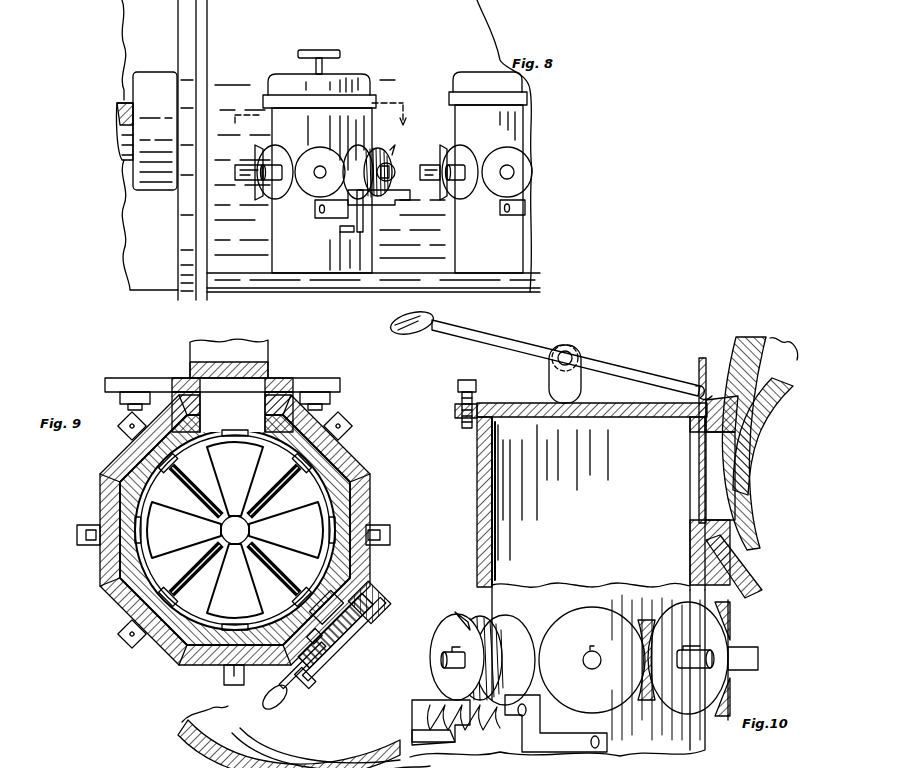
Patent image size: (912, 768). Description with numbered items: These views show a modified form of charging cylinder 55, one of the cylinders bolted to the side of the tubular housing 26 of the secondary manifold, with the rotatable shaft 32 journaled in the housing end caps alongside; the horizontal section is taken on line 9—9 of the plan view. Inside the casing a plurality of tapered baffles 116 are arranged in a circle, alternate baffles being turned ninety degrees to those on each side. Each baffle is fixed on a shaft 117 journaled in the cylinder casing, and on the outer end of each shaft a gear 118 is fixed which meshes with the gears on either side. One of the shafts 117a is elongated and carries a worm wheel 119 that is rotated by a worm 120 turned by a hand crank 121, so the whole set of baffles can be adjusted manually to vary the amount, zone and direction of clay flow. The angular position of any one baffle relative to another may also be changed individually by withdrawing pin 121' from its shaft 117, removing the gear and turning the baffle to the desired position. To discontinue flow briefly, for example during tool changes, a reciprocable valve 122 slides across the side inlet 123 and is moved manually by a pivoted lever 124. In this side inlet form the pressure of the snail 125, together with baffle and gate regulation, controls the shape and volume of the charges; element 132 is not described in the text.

In FIG. 8, the section line 9 is at (318, 123).
In FIG. 9, the tubular housing 26 is at (182, 742).
In FIG. 10, the tubular housing 26 is at (748, 565).
In FIG. 8, the rotatable shaft 32 is at (122, 153).
In FIG. 8, the charging cylinder 55 is at (372, 130).
In FIG. 9, the baffles 116 is at (180, 490).
In FIG. 9, the shaft 117 is at (82, 548).
In FIG. 10, the shaft 117 is at (590, 668).
In FIG. 9, the elongated shaft 117a is at (358, 600).
In FIG. 8, the gear 118 is at (278, 195).
In FIG. 9, the gear 118 is at (100, 496).
In FIG. 10, the gear 118 is at (615, 602).
In FIG. 8, the worm wheel 119 is at (393, 162).
In FIG. 9, the worm wheel 119 is at (362, 628).
In FIG. 10, the worm wheel 119 is at (472, 612).
In FIG. 8, the worm 120 is at (390, 212).
In FIG. 9, the worm 120 is at (322, 678).
In FIG. 10, the worm 120 is at (430, 700).
In FIG. 8, the hand crank 121 is at (331, 217).
In FIG. 9, the hand crank 121 is at (289, 677).
In FIG. 10, the hand crank 121 is at (419, 731).
In FIG. 9, the pin 121' is at (208, 682).
In FIG. 10, the pin 121' is at (454, 646).
In FIG. 9, the reciprocable valve 122 is at (270, 376).
In FIG. 10, the reciprocable valve 122 is at (702, 358).
In FIG. 9, the inlet 123 is at (190, 402).
In FIG. 10, the inlet 123 is at (690, 488).
In FIG. 10, the pivoted lever 124 is at (522, 354).
In FIG. 9, the snail 125 is at (268, 346).
In FIG. 10, the snail 125 is at (752, 466).
In FIG. 9, the bottom wall 132 is at (414, 761).